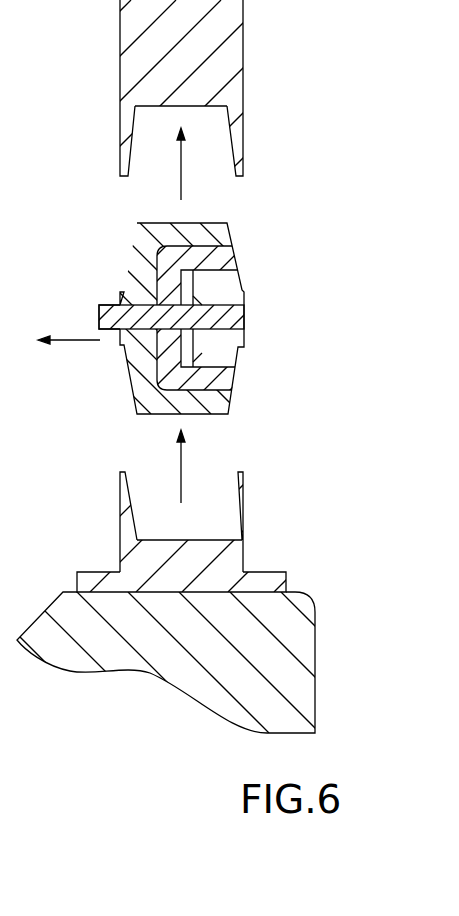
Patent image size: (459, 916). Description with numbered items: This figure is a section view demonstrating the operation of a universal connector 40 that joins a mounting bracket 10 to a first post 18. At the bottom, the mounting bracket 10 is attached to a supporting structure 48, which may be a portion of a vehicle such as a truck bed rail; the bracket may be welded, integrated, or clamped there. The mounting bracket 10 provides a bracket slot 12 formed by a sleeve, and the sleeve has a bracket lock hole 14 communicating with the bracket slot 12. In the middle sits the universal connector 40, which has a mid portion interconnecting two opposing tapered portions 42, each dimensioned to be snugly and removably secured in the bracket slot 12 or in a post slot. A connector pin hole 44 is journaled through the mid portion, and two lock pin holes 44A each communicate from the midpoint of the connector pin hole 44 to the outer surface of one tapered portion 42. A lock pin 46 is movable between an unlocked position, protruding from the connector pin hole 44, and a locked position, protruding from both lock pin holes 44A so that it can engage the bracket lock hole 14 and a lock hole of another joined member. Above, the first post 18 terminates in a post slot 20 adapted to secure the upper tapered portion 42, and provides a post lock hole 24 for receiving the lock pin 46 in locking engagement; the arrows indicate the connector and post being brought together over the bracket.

The mounting bracket 10 is at (197, 527).
The bracket slot 12 is at (132, 480).
The bracket lock hole 14 is at (242, 512).
The first post 18 is at (200, 94).
The post slot 20 is at (130, 170).
The post lock hole 24 is at (243, 140).
The universal connector 40 is at (125, 298).
The tapered portion 42 is at (227, 237).
The connector pin hole 44 is at (176, 344).
The lock pin hole 44A is at (233, 262).
The lock pin 46 is at (105, 317).
The supporting structure 48 is at (65, 600).